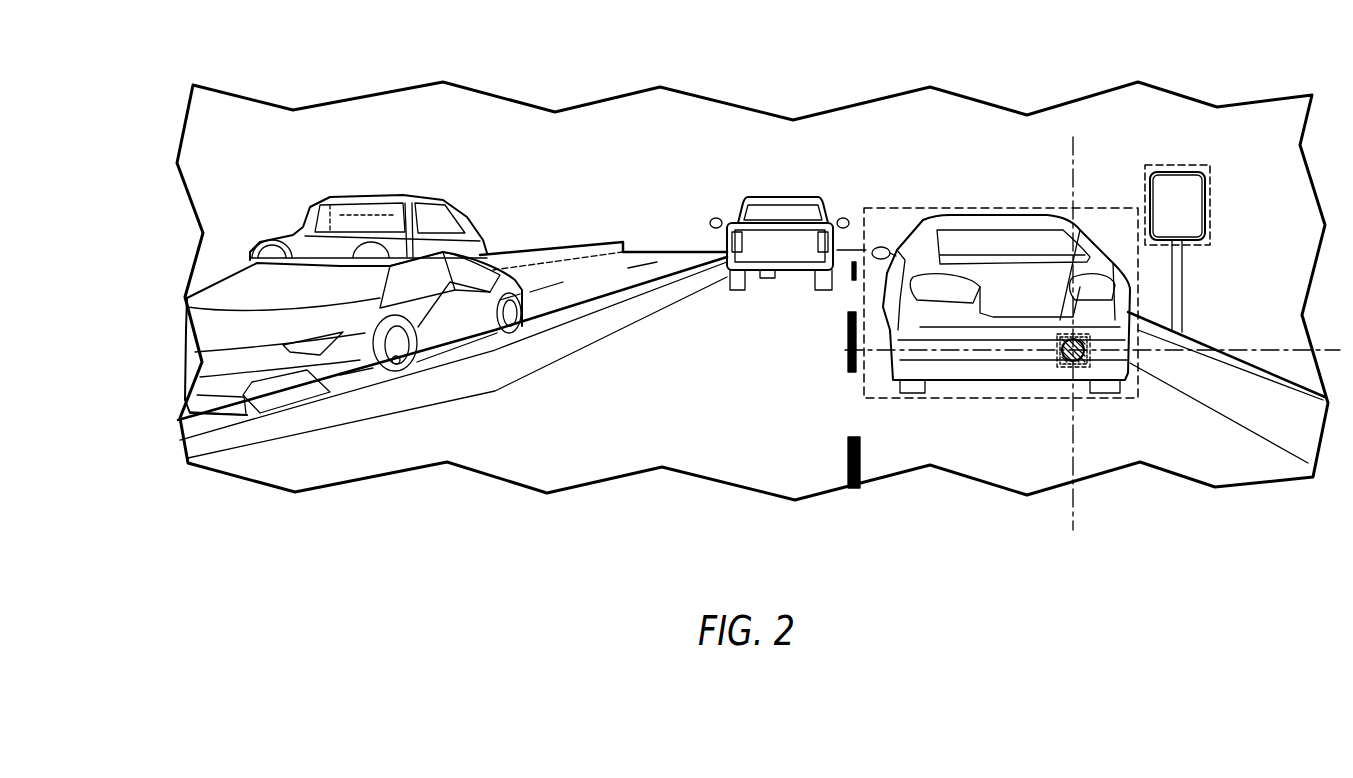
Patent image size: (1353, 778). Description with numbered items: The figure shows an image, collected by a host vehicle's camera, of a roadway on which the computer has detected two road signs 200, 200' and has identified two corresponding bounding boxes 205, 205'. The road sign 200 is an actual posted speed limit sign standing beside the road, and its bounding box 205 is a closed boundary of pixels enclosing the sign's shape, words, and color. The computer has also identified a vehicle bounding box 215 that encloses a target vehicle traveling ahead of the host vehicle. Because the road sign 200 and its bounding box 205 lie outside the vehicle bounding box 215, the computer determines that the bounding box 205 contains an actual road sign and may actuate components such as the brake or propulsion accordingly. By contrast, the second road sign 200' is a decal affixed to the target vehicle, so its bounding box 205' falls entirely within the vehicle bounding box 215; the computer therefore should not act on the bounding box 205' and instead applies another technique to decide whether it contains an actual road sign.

The road sign 200 is at (1209, 189).
The bounding box 205 is at (1161, 129).
The vehicle bounding box 215 is at (885, 205).
The road sign 200' is at (996, 440).
The bounding box 205' is at (1101, 439).